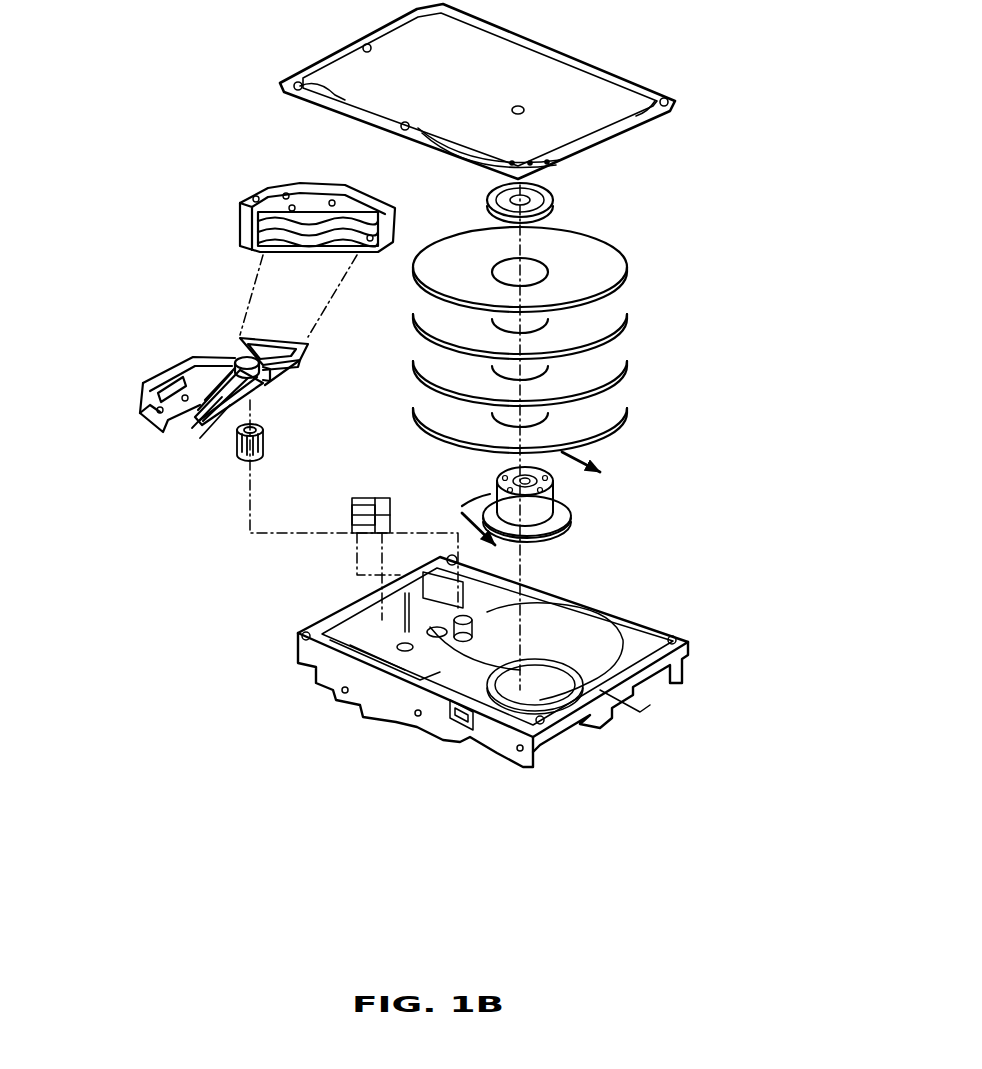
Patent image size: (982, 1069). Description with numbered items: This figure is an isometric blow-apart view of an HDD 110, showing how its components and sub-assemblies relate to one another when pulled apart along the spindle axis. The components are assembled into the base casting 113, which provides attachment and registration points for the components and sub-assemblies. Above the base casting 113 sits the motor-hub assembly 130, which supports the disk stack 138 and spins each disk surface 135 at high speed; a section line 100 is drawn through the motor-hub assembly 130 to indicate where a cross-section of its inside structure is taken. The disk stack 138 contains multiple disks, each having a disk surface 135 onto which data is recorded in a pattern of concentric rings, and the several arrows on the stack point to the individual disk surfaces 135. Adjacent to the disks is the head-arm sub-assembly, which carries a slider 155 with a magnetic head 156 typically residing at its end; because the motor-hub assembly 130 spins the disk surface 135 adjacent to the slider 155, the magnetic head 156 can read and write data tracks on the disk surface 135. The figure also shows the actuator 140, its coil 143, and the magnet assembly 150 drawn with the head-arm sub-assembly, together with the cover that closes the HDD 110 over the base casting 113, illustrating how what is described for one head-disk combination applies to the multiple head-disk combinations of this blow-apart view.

The section line 100 is at (617, 479).
The HDD 110 is at (680, 750).
The base casting 113 is at (311, 655).
The motor-hub assembly 130 is at (560, 507).
The disk surface 135 is at (626, 443).
The disk stack 138 is at (676, 210).
The actuator assembly 140 is at (222, 394).
The voice coil 143 is at (283, 328).
The magnet assembly 150 is at (238, 192).
The slider 155 is at (203, 426).
The magnetic head 156 is at (193, 428).